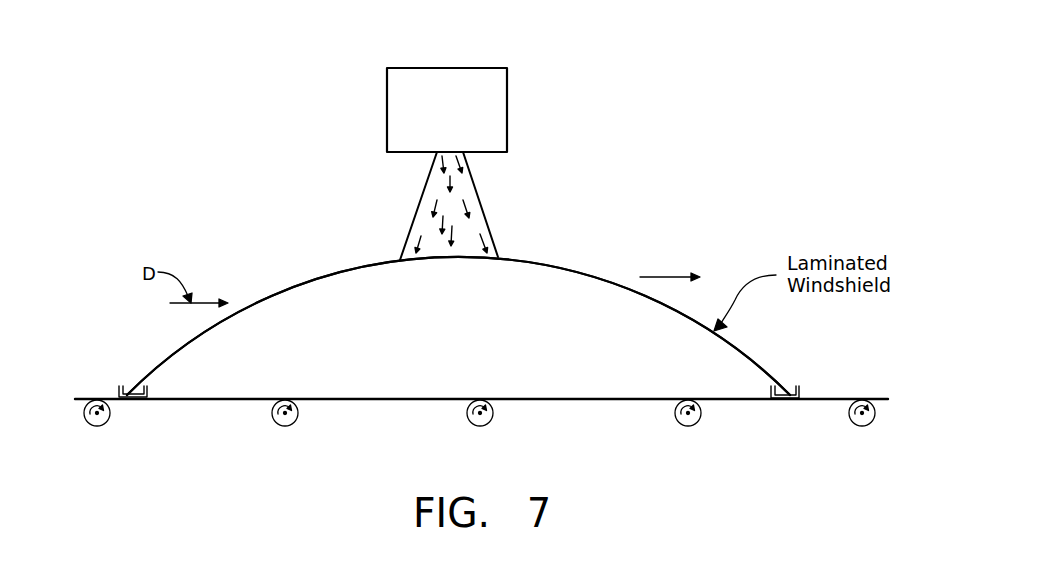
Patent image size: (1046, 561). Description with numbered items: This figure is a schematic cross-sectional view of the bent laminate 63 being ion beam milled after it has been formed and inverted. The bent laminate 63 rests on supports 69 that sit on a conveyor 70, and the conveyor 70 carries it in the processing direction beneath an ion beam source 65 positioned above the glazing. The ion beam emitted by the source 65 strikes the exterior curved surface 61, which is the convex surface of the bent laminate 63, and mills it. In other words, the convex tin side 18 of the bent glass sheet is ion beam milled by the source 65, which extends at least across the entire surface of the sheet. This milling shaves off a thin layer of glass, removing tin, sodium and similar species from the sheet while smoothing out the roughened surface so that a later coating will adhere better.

The ion beam source 65 is at (507, 107).
The bent laminate 63 is at (312, 270).
The tin side 18 is at (458, 295).
The exterior curved surface 61 is at (610, 280).
The supports 69 is at (148, 393).
The conveyor 70 is at (335, 400).